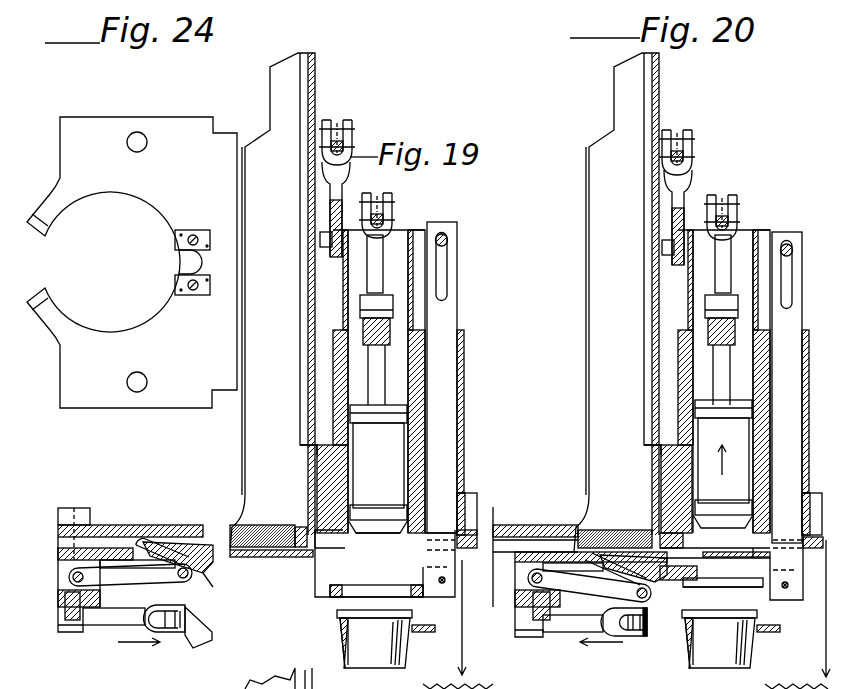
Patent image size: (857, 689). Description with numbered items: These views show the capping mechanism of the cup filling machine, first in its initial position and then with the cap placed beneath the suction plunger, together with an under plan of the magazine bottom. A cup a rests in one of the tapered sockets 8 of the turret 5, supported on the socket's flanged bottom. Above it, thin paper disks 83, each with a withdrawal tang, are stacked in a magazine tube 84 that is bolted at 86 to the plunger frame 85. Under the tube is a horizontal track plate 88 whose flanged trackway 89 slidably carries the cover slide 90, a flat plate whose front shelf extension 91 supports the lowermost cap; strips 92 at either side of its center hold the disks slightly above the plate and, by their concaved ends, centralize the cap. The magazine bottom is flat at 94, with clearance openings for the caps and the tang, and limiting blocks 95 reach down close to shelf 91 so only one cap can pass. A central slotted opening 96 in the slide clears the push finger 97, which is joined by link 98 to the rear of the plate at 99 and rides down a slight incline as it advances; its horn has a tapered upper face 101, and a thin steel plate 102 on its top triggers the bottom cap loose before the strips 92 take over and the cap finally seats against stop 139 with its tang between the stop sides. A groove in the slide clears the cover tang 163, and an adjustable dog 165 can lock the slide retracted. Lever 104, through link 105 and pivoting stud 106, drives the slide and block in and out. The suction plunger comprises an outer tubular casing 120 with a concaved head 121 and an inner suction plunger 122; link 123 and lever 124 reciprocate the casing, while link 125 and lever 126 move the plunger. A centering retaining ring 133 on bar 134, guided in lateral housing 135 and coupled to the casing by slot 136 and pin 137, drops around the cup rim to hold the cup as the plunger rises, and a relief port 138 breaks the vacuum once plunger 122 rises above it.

In FIG. 24, the flat bottom of cap magazine 94 is at (132, 262).
In FIG. 24, the limiting blocks 95 is at (175, 290).
In FIG. 19, the limiting blocks 95 is at (315, 542).
In FIG. 20, the limiting blocks 95 is at (677, 545).
In FIG. 19, the magazine tube 84 is at (273, 301).
In FIG. 20, the magazine tube 84 is at (617, 302).
In FIG. 19, the plunger frame 85 is at (343, 410).
In FIG. 20, the plunger frame 85 is at (688, 405).
In FIG. 19, the bolted connection 86 is at (323, 464).
In FIG. 20, the bolted connection 86 is at (668, 470).
In FIG. 19, the relief port 138 is at (317, 444).
In FIG. 20, the relief port 138 is at (660, 447).
In FIG. 19, the paper disk 83 is at (273, 524).
In FIG. 20, the paper disk 83 is at (598, 530).
In FIG. 19, the cover tang 163 is at (302, 528).
In FIG. 19, the tapered upper face 101 is at (235, 545).
In FIG. 20, the tapered upper face 101 is at (698, 573).
In FIG. 19, the thin steel plate 102 is at (187, 540).
In FIG. 19, the adjustable dog 165 is at (82, 512).
In FIG. 19, the cover slide 90 is at (97, 525).
In FIG. 20, the cover slide 90 is at (550, 552).
In FIG. 19, the track plate 88 is at (113, 562).
In FIG. 20, the track plate 88 is at (513, 565).
In FIG. 19, the strips 92 is at (147, 550).
In FIG. 20, the strips 92 is at (622, 555).
In FIG. 19, the pivot connection 99 is at (75, 578).
In FIG. 20, the pivot connection 99 is at (530, 580).
In FIG. 19, the link 98 is at (117, 576).
In FIG. 20, the link 98 is at (617, 593).
In FIG. 19, the slotted opening 96 is at (143, 560).
In FIG. 19, the push finger 97 is at (213, 587).
In FIG. 20, the push finger 97 is at (597, 578).
In FIG. 19, the pivoting stud 106 is at (68, 610).
In FIG. 20, the pivoting stud 106 is at (520, 610).
In FIG. 19, the link 105 is at (117, 618).
In FIG. 20, the link 105 is at (552, 622).
In FIG. 19, the lever 104 is at (190, 638).
In FIG. 20, the lever 104 is at (633, 627).
In FIG. 19, the lever 124 is at (330, 120).
In FIG. 20, the lever 124 is at (677, 128).
In FIG. 19, the link 123 is at (333, 190).
In FIG. 20, the link 123 is at (677, 195).
In FIG. 19, the lever 126 is at (385, 193).
In FIG. 20, the lever 126 is at (723, 195).
In FIG. 19, the link 125 is at (377, 255).
In FIG. 20, the link 125 is at (722, 275).
In FIG. 19, the outer tubular casing 120 is at (430, 445).
In FIG. 20, the outer tubular casing 120 is at (737, 247).
In FIG. 19, the pin 137 is at (447, 238).
In FIG. 20, the pin 137 is at (787, 245).
In FIG. 19, the slot 136 is at (444, 281).
In FIG. 20, the slot 136 is at (788, 298).
In FIG. 19, the lateral housing 135 is at (465, 387).
In FIG. 20, the lateral housing 135 is at (805, 363).
In FIG. 19, the bar 134 is at (412, 458).
In FIG. 20, the bar 134 is at (785, 431).
In FIG. 19, the suction plunger 122 is at (378, 469).
In FIG. 20, the suction plunger 122 is at (723, 464).
In FIG. 19, the concaved head 121 is at (362, 533).
In FIG. 19, the stop 139 is at (430, 527).
In FIG. 20, the stop 139 is at (763, 548).
In FIG. 19, the centering retaining ring 133 is at (372, 588).
In FIG. 20, the centering retaining ring 133 is at (770, 632).
In FIG. 20, the front shelf extension 91 is at (753, 557).
In FIG. 20, the flanged trackway 89 is at (502, 553).
In FIG. 19, the turret 5 is at (335, 642).
In FIG. 20, the turret 5 is at (680, 657).
In FIG. 19, the tapered sockets 8 is at (350, 632).
In FIG. 20, the tapered sockets 8 is at (690, 636).
In FIG. 19, the cup a is at (381, 643).
In FIG. 20, the cup a is at (724, 643).